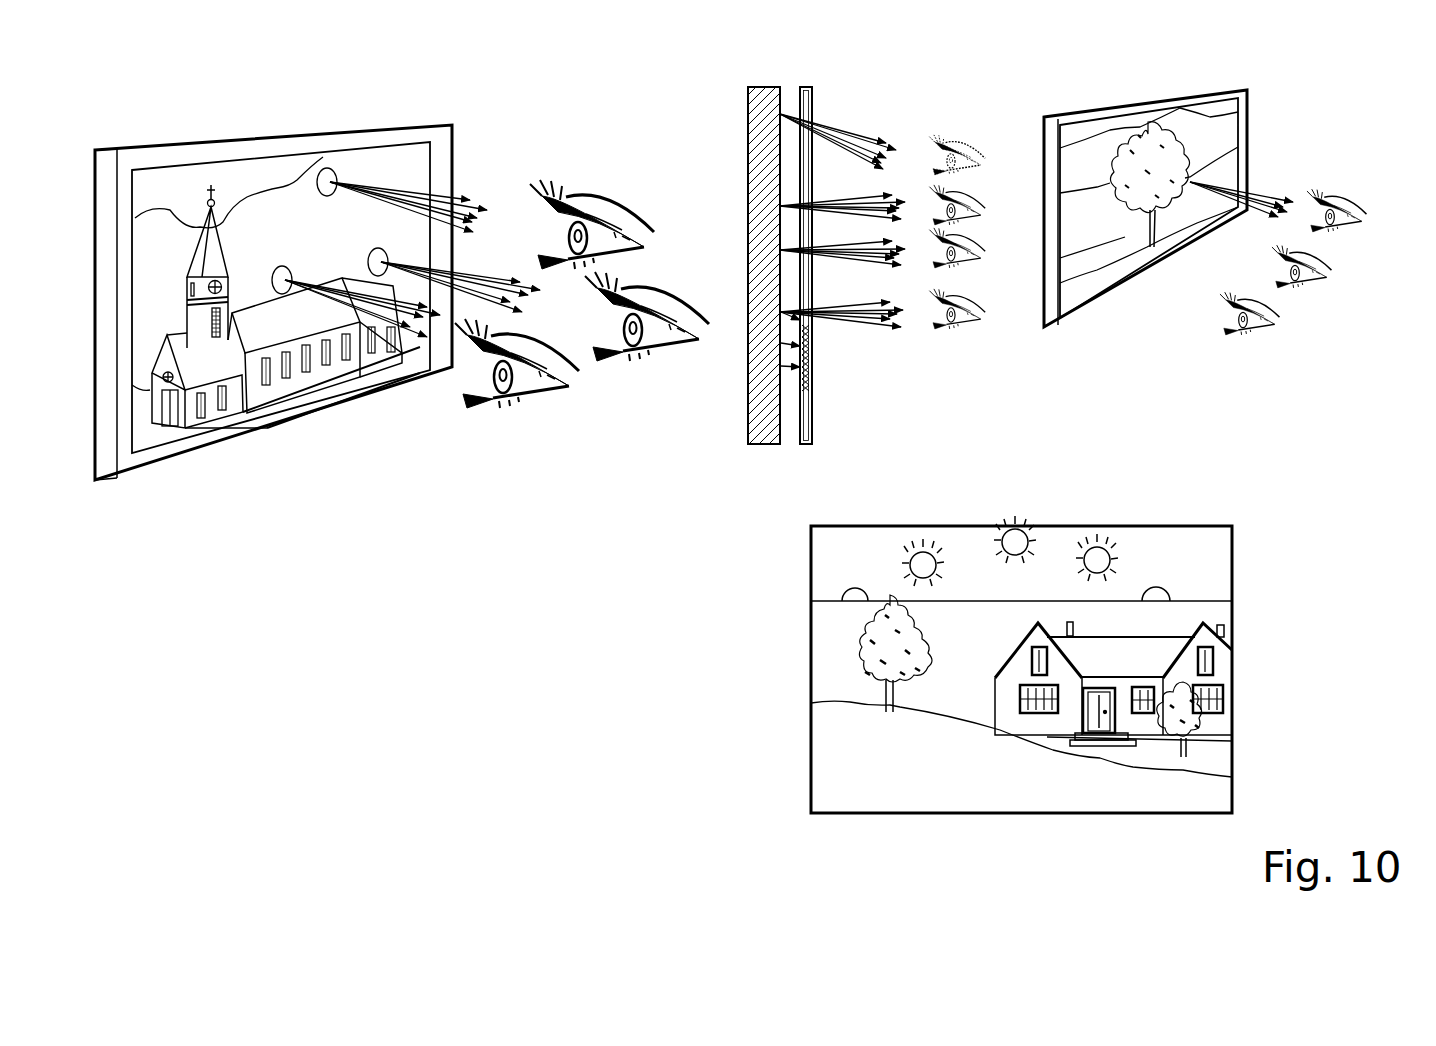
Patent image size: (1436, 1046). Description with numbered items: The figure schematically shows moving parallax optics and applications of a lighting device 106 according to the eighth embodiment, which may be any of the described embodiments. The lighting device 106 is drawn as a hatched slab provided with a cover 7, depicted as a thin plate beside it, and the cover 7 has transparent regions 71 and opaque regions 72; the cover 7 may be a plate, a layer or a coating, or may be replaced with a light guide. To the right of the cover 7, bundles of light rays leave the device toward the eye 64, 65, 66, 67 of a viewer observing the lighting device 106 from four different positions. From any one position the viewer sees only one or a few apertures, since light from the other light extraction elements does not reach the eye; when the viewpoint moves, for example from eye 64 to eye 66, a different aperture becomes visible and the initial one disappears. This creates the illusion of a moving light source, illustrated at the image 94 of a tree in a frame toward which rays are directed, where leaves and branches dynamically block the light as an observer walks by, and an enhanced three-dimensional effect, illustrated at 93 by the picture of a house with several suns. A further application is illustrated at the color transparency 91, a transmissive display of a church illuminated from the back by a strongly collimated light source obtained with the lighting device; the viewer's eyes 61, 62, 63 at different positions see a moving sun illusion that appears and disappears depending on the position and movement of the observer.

The color transparency 91 is at (263, 135).
The eye of the viewer 61 is at (545, 205).
The eye of the viewer 62 is at (608, 358).
The eye of the viewer 63 is at (472, 402).
The lighting device 106 is at (767, 87).
The cover 7 is at (813, 107).
The transparent regions 71 is at (814, 425).
The opaque regions 72 is at (814, 356).
The eye of the viewer 64 is at (936, 146).
The eye of the viewer 65 is at (940, 210).
The eye of the viewer 66 is at (940, 266).
The eye of the viewer 67 is at (938, 318).
The image of the tree 94 is at (1123, 102).
The enhanced 3D effect illustration 93 is at (992, 815).